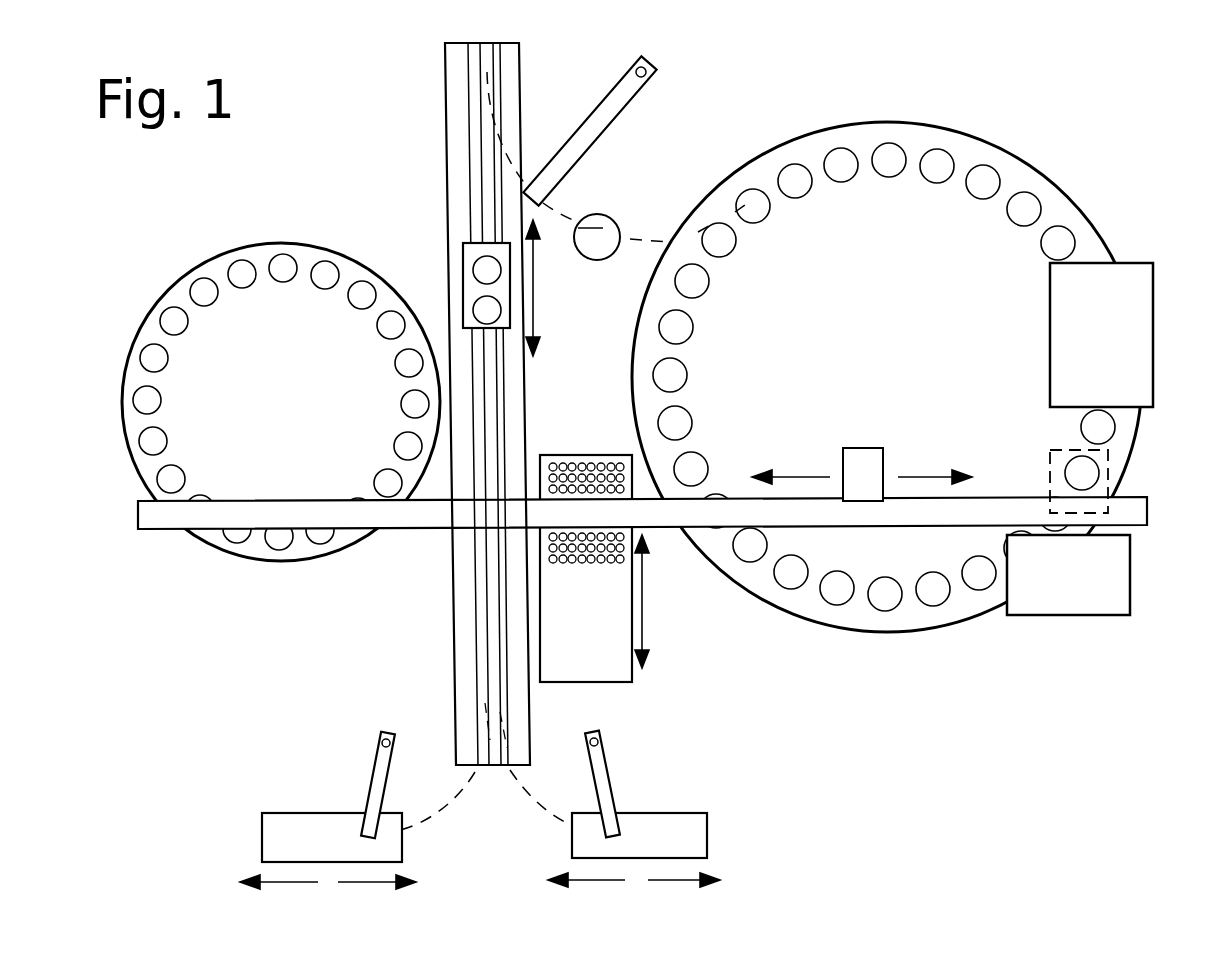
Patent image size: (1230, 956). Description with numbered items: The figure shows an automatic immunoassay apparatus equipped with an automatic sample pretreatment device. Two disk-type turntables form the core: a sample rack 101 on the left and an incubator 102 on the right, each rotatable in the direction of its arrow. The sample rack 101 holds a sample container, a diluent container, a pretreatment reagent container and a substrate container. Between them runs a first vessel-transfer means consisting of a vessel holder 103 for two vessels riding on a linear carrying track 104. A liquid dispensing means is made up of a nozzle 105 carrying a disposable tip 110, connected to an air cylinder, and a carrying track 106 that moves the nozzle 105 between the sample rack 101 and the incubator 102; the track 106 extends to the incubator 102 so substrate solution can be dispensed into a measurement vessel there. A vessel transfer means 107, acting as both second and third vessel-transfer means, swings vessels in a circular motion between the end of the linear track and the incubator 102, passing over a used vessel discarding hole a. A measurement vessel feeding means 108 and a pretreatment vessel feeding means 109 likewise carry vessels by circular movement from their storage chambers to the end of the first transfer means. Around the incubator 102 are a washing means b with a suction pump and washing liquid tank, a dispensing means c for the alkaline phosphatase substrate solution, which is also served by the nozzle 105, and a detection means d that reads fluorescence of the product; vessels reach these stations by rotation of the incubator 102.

The sample rack 101 is at (277, 268).
The incubator 102 is at (1010, 183).
The vessel holder 103 is at (506, 297).
The linear carrying track 104 is at (457, 165).
The nozzle 105 is at (866, 470).
The carrying track 106 is at (1133, 509).
The vessel transfer means 107 is at (594, 131).
The measurement vessel feeding means 108 is at (690, 835).
The pretreatment vessel feeding means 109 is at (310, 832).
The disposable tip 110 is at (558, 456).
The used vessel discarding hole a is at (605, 222).
The washing means b is at (1130, 348).
The dispensing means c is at (1104, 472).
The detection means d is at (1115, 596).